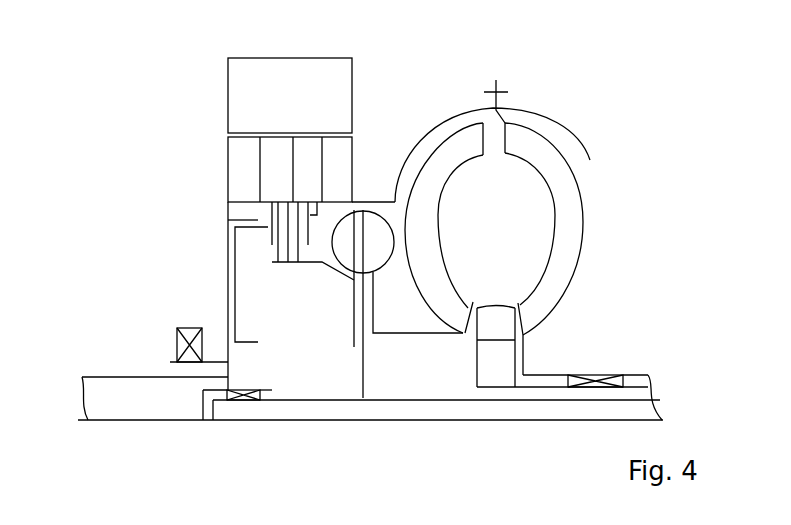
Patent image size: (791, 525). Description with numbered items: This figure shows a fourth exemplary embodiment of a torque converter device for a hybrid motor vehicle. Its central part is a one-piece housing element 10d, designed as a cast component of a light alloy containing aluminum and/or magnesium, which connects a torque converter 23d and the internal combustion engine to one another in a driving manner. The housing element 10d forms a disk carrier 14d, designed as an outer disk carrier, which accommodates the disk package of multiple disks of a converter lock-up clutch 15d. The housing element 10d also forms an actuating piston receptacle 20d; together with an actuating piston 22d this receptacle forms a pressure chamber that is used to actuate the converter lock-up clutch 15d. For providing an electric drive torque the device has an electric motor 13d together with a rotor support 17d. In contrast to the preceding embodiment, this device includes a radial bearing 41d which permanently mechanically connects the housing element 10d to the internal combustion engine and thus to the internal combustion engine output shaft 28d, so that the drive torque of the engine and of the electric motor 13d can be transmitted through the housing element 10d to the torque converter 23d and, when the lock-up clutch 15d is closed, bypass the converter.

The housing element 10d is at (372, 203).
The electric motor 13d is at (200, 103).
The disk carrier 14d is at (296, 203).
The converter lock-up clutch 15d is at (310, 277).
The rotor support 17d is at (243, 201).
The actuating piston receptacle 20d is at (228, 313).
The actuating piston 22d is at (237, 297).
The torque converter 23d is at (553, 137).
The internal combustion engine output shaft 28d is at (163, 388).
The radial bearing 41d is at (150, 332).